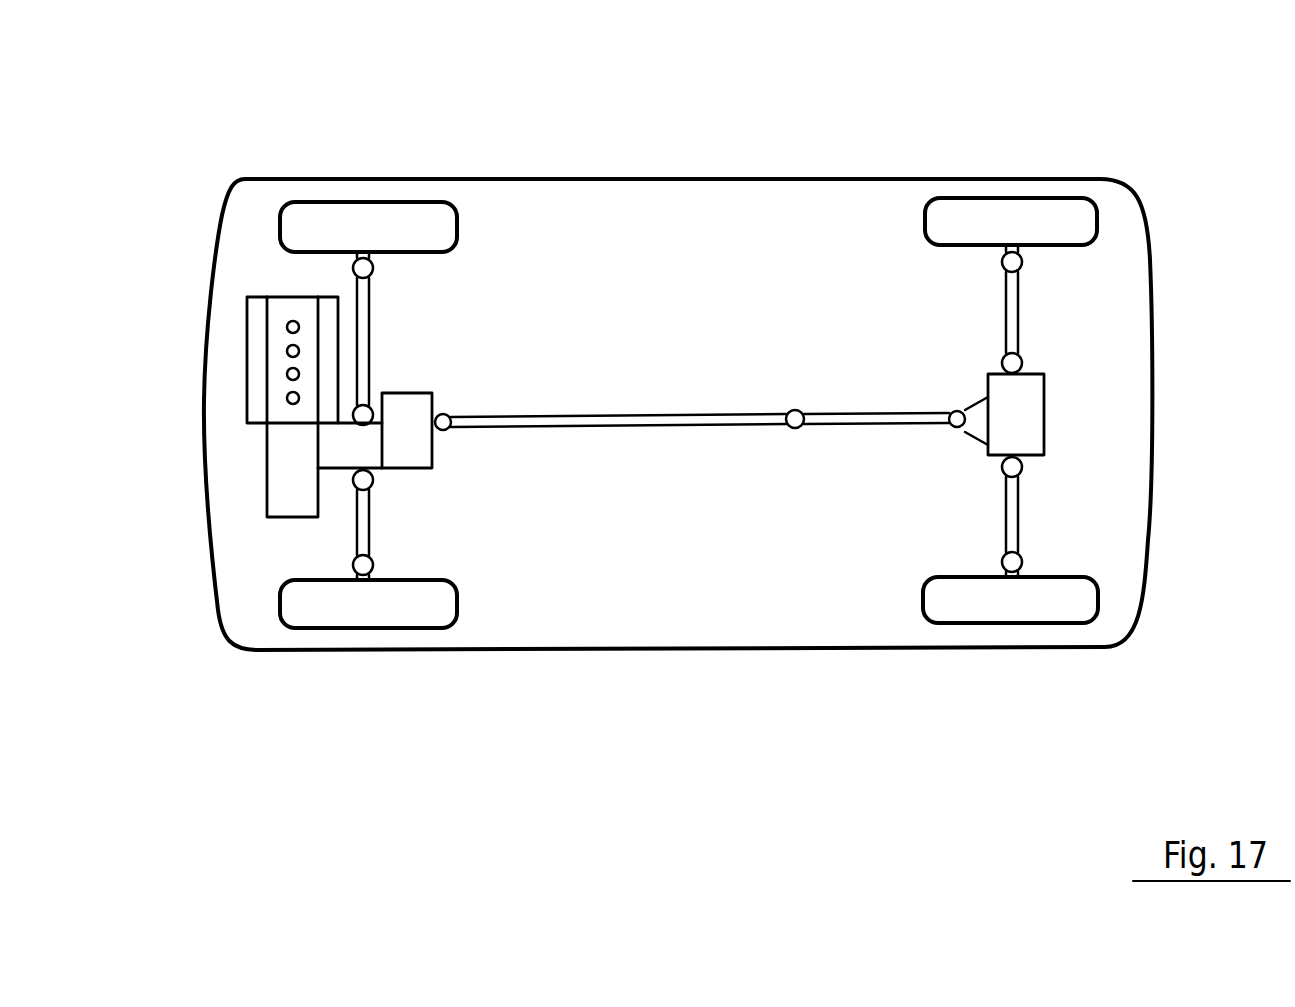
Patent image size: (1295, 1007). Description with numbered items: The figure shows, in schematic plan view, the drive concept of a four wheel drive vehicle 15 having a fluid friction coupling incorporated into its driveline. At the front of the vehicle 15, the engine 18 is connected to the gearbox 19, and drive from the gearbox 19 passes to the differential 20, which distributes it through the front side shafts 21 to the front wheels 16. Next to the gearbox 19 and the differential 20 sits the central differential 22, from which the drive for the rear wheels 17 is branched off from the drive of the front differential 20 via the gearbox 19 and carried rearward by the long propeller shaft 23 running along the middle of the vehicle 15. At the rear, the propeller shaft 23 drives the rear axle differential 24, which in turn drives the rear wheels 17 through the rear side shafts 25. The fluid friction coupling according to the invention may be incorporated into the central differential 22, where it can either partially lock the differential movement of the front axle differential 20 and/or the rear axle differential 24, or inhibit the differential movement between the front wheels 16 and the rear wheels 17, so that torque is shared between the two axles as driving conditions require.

The four wheel drive vehicle 15 is at (692, 222).
The front wheels 16 is at (302, 217).
The rear wheels 17 is at (971, 220).
The engine 18 is at (278, 313).
The gearbox 19 is at (278, 468).
The differential 20 is at (335, 453).
The front side shafts 21 is at (367, 308).
The central differential 22 is at (420, 440).
The propeller shaft 23 is at (535, 425).
The rear axle differential 24 is at (1028, 410).
The rear side shafts 25 is at (1013, 310).